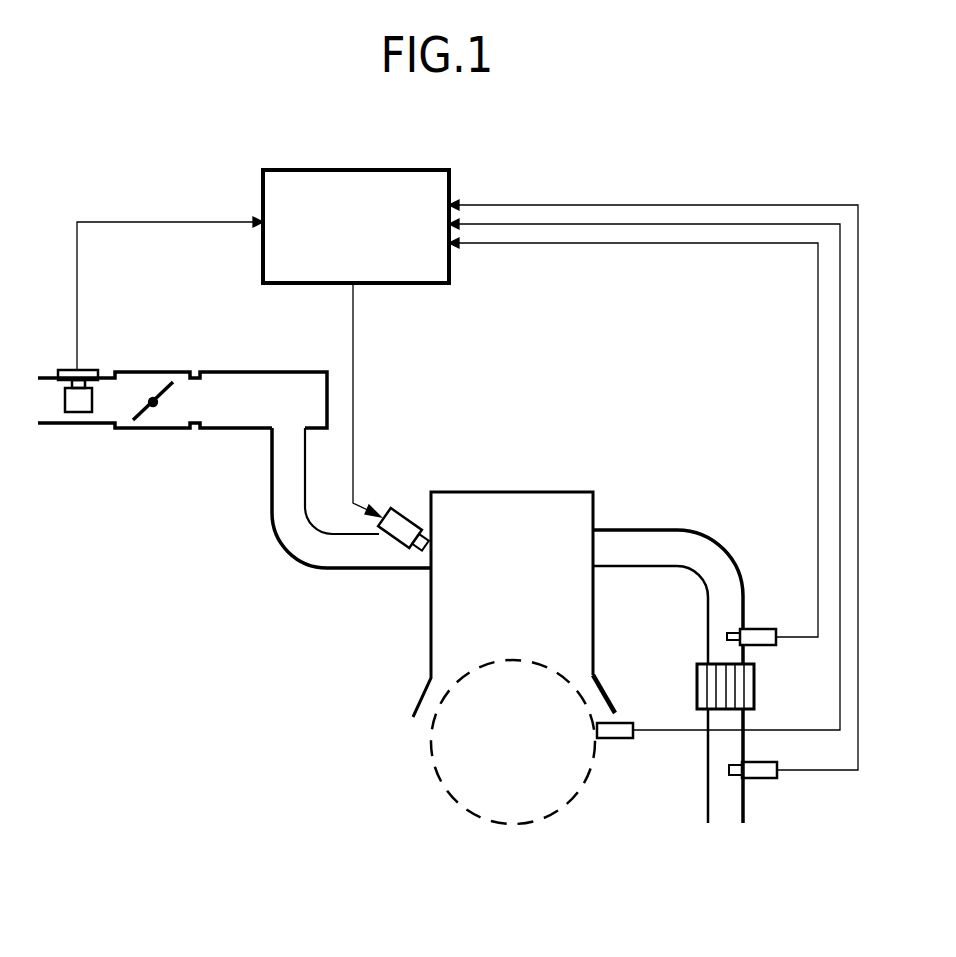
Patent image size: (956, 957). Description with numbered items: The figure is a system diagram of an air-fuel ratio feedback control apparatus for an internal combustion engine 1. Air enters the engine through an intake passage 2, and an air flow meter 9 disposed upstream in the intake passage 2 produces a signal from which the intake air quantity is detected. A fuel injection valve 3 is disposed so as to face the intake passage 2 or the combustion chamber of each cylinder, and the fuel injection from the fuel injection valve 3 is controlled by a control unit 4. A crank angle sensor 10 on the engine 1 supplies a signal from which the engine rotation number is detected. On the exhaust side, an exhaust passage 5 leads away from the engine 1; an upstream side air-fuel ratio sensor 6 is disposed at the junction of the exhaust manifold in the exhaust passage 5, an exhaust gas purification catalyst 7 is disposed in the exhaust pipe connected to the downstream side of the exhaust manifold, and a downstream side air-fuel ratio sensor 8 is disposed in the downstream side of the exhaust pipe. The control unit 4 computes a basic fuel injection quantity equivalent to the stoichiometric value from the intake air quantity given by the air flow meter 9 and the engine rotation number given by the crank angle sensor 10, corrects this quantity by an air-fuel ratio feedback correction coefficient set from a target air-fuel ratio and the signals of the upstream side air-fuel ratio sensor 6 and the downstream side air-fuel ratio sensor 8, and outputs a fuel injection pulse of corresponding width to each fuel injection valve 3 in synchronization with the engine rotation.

The internal combustion engine 1 is at (418, 633).
The intake passage 2 is at (272, 515).
The fuel injection valve 3 is at (407, 513).
The control unit 4 is at (358, 170).
The exhaust passage 5 is at (713, 530).
The upstream side air-fuel ratio sensor 6 is at (762, 628).
The exhaust gas purification catalyst 7 is at (755, 685).
The downstream side air-fuel ratio sensor 8 is at (757, 778).
The air flow meter 9 is at (88, 370).
The crank angle sensor 10 is at (613, 738).